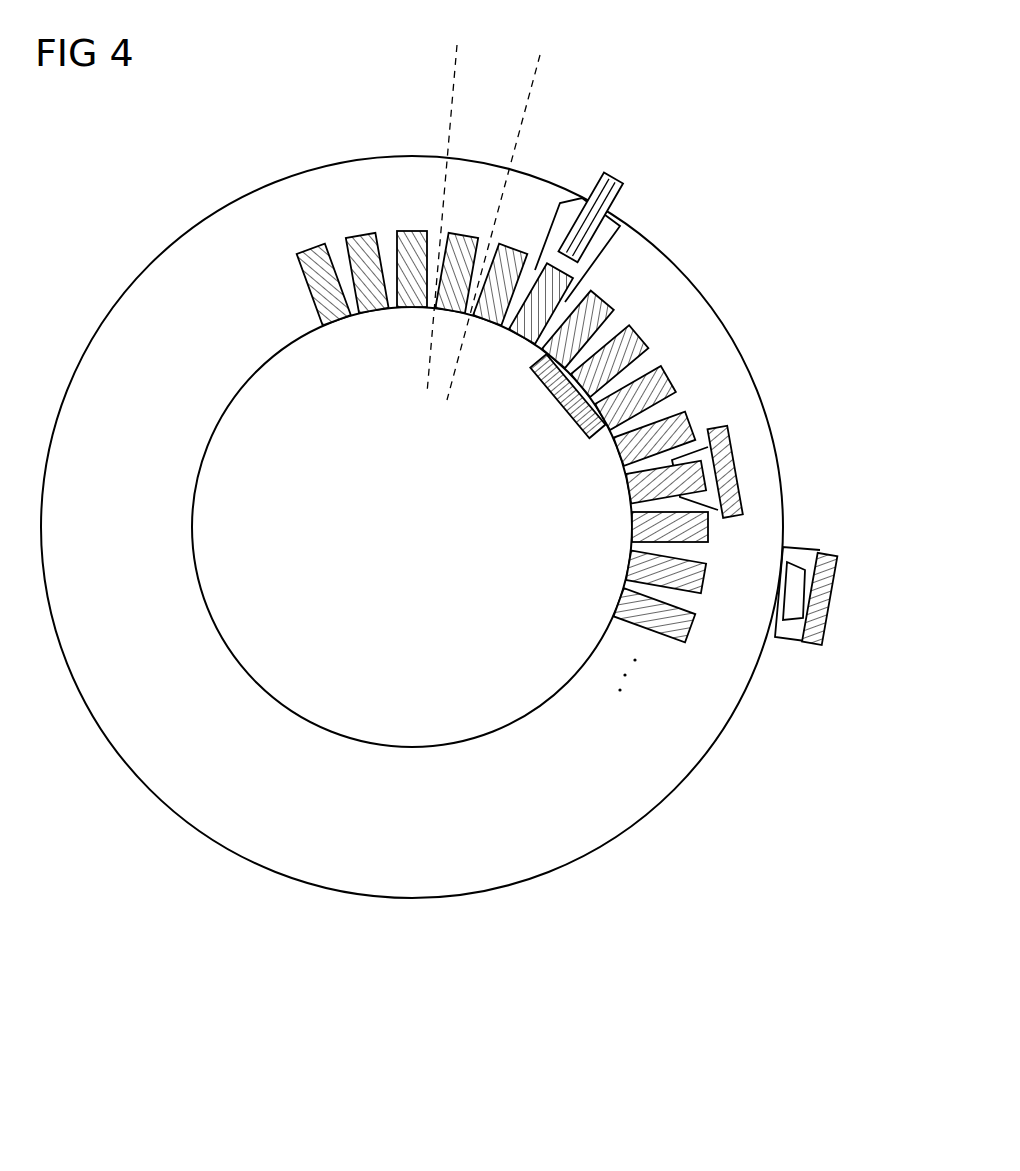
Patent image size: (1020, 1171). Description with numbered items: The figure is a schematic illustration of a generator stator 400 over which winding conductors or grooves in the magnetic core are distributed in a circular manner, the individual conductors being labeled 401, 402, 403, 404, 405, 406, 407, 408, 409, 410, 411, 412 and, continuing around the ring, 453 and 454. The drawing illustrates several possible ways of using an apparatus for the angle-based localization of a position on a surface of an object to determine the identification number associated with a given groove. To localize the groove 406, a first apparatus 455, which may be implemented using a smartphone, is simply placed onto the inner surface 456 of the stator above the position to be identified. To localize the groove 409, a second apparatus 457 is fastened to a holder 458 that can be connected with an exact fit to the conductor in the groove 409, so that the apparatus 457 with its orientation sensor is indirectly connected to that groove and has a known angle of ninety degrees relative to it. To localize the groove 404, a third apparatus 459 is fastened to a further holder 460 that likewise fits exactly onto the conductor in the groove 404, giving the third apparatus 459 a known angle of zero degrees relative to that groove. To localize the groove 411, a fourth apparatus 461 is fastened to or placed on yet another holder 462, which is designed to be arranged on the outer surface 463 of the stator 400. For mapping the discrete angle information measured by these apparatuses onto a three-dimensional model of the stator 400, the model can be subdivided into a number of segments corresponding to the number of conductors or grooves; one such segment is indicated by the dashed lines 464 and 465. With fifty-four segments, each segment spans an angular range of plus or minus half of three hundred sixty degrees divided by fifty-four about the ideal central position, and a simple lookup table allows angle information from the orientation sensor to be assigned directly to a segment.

The stator 400 is at (412, 566).
The conductor 401 is at (415, 230).
The conductor 402 is at (465, 233).
The conductor 403 is at (512, 250).
The groove 404 is at (530, 338).
The conductor 405 is at (612, 293).
The groove 406 is at (645, 335).
The conductor 407 is at (672, 378).
The conductor 408 is at (695, 425).
The groove 409 is at (633, 490).
The conductor 410 is at (713, 532).
The groove 411 is at (707, 580).
The conductor 412 is at (692, 628).
The conductor 453 is at (318, 250).
The conductor 454 is at (365, 237).
The first apparatus 455 is at (560, 405).
The inner surface 456 is at (415, 748).
The second apparatus 457 is at (745, 465).
The holder 458 is at (722, 440).
The third apparatus 459 is at (610, 188).
The further holder 460 is at (628, 220).
The fourth apparatus 461 is at (838, 598).
The holder 462 is at (825, 637).
The outer surface 463 is at (412, 898).
The dashed line 464 is at (447, 70).
The dashed line 465 is at (537, 72).